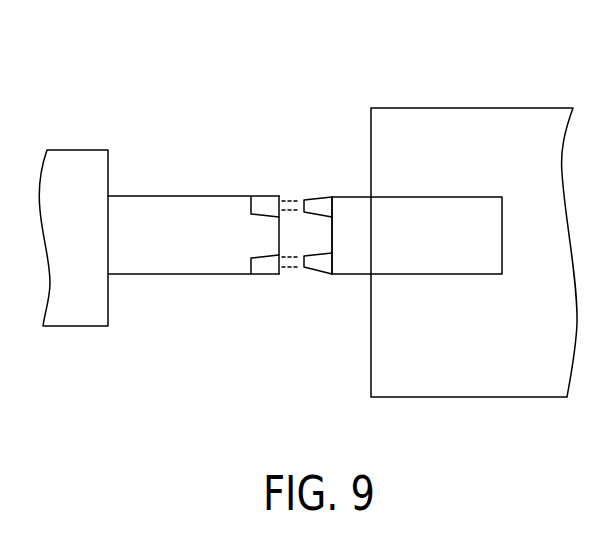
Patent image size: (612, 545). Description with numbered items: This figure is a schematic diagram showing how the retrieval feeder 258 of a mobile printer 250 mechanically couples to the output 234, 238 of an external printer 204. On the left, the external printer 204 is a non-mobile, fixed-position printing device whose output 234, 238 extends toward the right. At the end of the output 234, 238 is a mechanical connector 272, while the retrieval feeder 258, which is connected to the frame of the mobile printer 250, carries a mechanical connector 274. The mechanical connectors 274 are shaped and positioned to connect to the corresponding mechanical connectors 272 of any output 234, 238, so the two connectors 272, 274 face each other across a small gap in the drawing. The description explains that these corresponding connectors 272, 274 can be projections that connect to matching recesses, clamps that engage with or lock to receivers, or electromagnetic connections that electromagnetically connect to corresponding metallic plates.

The external printer 204 is at (83, 149).
The output 234 is at (193, 207).
The output 238 is at (178, 213).
The mechanical connector 272 is at (263, 185).
The mechanical connector 274 is at (314, 184).
The mobile printer 250 is at (500, 117).
The retrieval feeder 258 is at (427, 203).